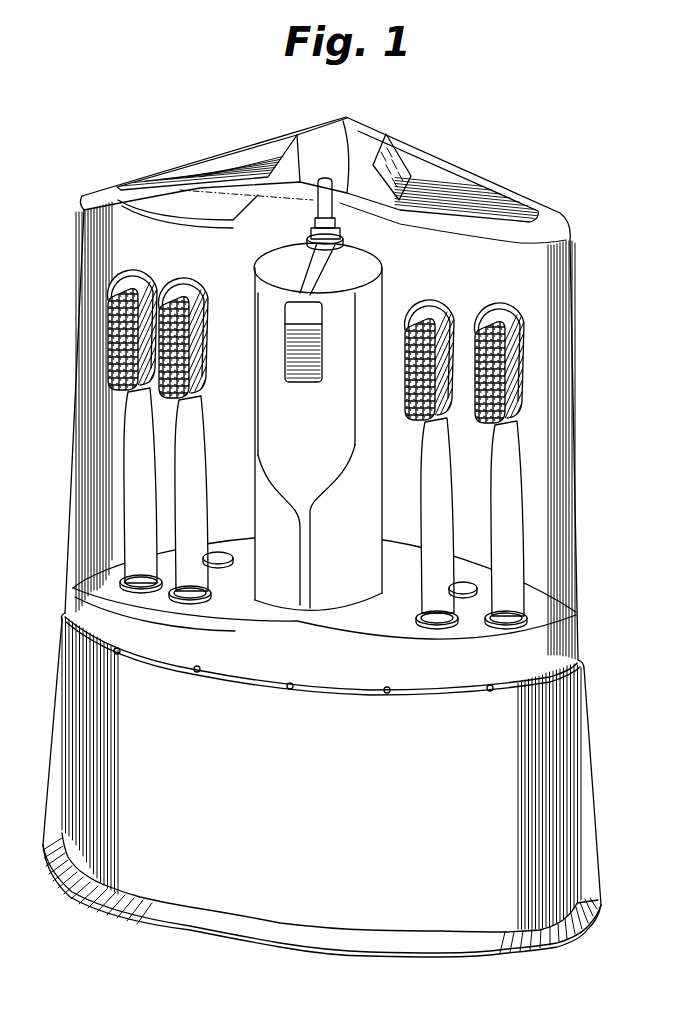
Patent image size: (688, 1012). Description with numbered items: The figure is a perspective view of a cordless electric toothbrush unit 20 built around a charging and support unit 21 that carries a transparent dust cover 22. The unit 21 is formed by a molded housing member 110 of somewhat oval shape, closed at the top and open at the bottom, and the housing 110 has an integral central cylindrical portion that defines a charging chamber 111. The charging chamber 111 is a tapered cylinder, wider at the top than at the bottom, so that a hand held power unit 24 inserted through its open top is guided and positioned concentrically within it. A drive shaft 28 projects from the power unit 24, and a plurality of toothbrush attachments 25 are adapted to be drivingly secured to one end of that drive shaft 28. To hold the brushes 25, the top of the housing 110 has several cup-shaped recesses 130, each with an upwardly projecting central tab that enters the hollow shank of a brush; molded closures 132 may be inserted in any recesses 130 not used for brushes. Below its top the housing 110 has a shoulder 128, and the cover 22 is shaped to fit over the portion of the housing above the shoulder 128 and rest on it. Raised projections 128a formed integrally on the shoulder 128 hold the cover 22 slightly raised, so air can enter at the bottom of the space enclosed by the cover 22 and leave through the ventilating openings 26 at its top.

The cordless electric toothbrush unit 20 is at (341, 543).
The charging and support unit 21 is at (590, 732).
The transparent dust cover 22 is at (578, 440).
The hand held power unit 24 is at (383, 311).
The toothbrush attachments 25 is at (190, 276).
The ventilating openings 26 is at (388, 145).
The drive shaft 28 is at (338, 172).
The molded housing member 110 is at (560, 778).
The charging chamber 111 is at (273, 597).
The shoulder 128 is at (345, 692).
The raised projections 128a is at (288, 689).
The cup-shaped recesses 130 is at (175, 594).
The molded closures 132 is at (216, 552).